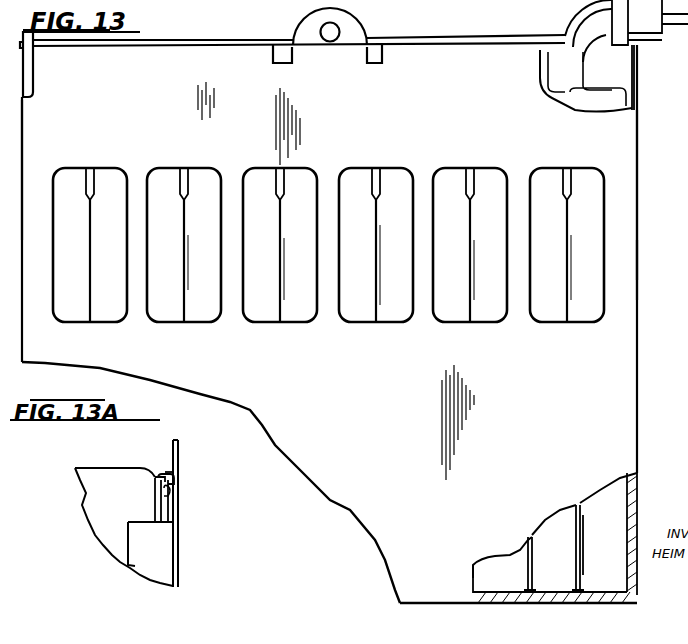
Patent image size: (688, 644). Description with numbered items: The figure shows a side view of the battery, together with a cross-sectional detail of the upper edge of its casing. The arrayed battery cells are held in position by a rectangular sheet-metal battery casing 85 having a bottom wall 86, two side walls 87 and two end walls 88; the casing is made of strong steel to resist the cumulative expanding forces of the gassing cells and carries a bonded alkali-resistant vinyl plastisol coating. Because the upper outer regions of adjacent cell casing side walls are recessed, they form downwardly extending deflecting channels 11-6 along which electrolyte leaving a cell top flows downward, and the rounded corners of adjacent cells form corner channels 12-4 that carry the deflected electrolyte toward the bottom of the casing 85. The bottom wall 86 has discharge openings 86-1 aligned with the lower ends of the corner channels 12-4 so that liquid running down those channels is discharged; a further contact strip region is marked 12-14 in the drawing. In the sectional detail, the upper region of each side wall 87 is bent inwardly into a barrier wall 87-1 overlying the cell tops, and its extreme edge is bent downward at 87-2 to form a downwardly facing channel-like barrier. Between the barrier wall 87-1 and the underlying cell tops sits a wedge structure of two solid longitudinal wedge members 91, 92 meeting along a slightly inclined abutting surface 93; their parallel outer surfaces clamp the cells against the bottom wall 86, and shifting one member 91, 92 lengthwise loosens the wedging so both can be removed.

In FIG. 13, the side wall 87 is at (418, 99).
In FIG. 13A, the side wall 87 is at (182, 545).
In FIG. 13, the end wall 88 is at (641, 136).
In FIG. 13A, the end wall 88 is at (108, 545).
In FIG. 13, the battery casing 85 is at (651, 249).
In FIG. 13, the bottom wall 86 is at (433, 604).
In FIG. 13, the discharge openings 86-1 is at (576, 590).
In FIG. 13, the deflecting channels 11-6 is at (89, 168).
In FIG. 13, the corner channels 12-4 is at (88, 256).
In FIG. 13, the contact strip 12-14 is at (531, 562).
In FIG. 13A, the barrier wall 87-1 is at (172, 470).
In FIG. 13A, the downwardly bent edge 87-2 is at (155, 476).
In FIG. 13A, the wedge member 91 is at (176, 485).
In FIG. 13A, the wedge member 92 is at (168, 507).
In FIG. 13A, the abutting surface 93 is at (172, 497).